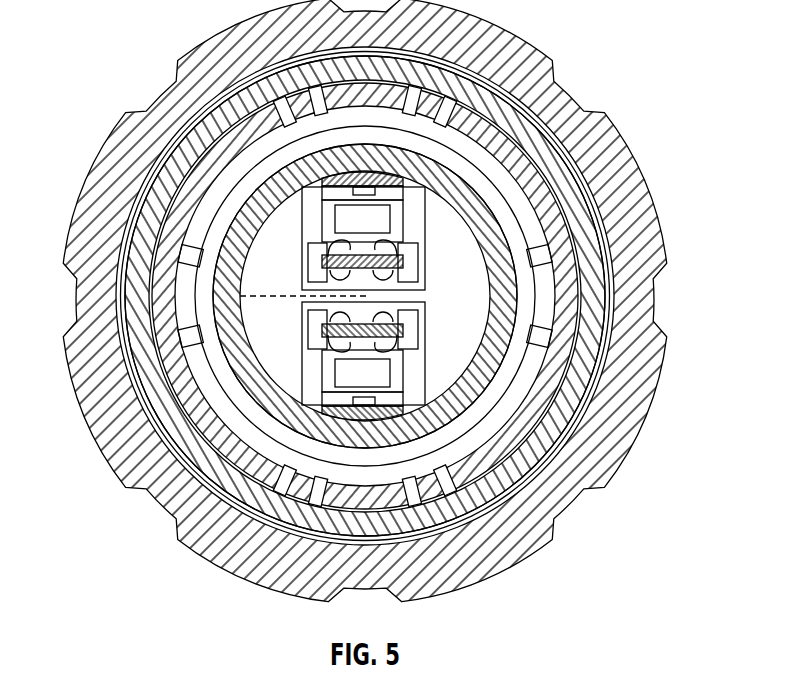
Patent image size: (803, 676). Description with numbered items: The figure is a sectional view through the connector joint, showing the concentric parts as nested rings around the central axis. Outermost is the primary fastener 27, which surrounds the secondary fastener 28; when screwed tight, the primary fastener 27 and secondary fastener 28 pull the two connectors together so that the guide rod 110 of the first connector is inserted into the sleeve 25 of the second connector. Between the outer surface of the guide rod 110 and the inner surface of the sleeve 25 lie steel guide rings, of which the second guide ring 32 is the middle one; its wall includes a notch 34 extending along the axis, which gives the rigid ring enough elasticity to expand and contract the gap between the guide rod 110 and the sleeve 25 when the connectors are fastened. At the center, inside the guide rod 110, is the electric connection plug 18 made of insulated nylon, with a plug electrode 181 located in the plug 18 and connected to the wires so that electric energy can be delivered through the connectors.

The electric connection plug 18 is at (483, 223).
The plug electrode 181 is at (377, 257).
The guide rod 110 is at (525, 277).
The second guide ring 32 is at (537, 330).
The notch 34 is at (185, 287).
The sleeve 25 is at (548, 372).
The secondary fastener 28 is at (547, 442).
The primary fastener 27 is at (523, 523).